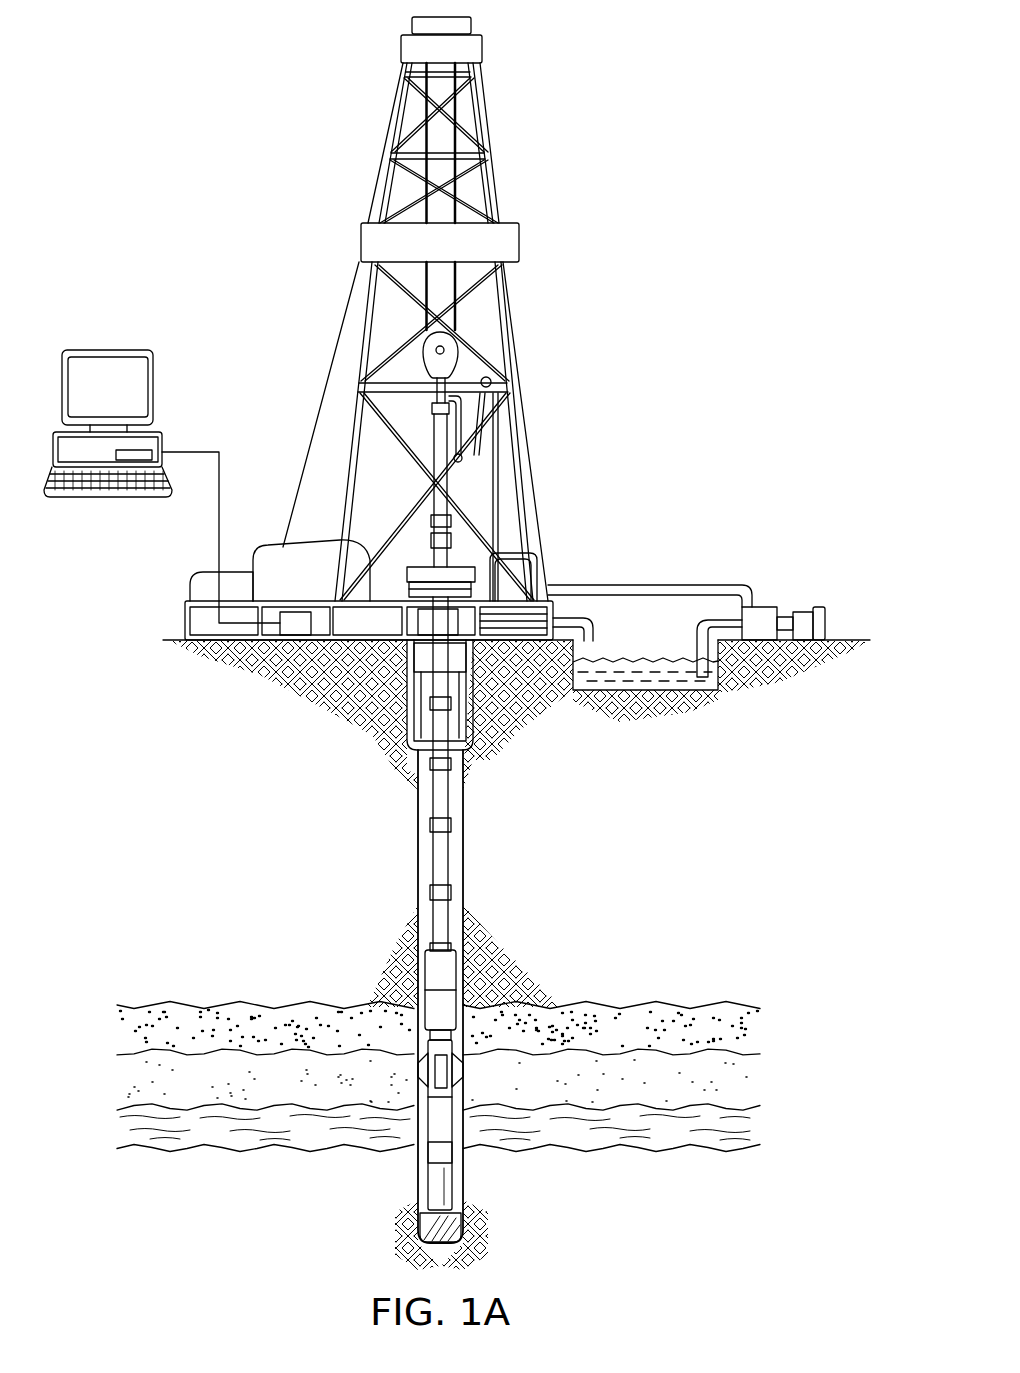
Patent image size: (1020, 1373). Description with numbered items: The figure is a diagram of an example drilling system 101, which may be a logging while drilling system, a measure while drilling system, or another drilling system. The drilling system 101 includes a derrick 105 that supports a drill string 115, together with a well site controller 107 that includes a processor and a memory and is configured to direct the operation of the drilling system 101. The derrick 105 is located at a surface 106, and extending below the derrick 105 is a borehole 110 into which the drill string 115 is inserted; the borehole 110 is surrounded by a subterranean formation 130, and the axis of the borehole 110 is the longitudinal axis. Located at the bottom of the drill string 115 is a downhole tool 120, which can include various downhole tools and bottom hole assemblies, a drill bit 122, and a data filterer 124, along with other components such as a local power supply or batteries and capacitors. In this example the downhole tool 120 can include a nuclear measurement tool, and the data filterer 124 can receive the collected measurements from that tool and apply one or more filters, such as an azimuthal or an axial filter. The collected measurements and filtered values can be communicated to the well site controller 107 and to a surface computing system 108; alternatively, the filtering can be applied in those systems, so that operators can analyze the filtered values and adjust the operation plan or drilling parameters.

The drilling system 101 is at (219, 121).
The derrick 105 is at (512, 321).
The surface 106 is at (843, 639).
The well site controller 107 is at (295, 637).
The surface computing system 108 is at (108, 350).
The borehole 110 is at (420, 846).
The drill string 115 is at (450, 862).
The downhole tool 120 is at (472, 1145).
The drill bit 122 is at (420, 1223).
The data filterer 124 is at (447, 1153).
The subterranean formation 130 is at (784, 1089).